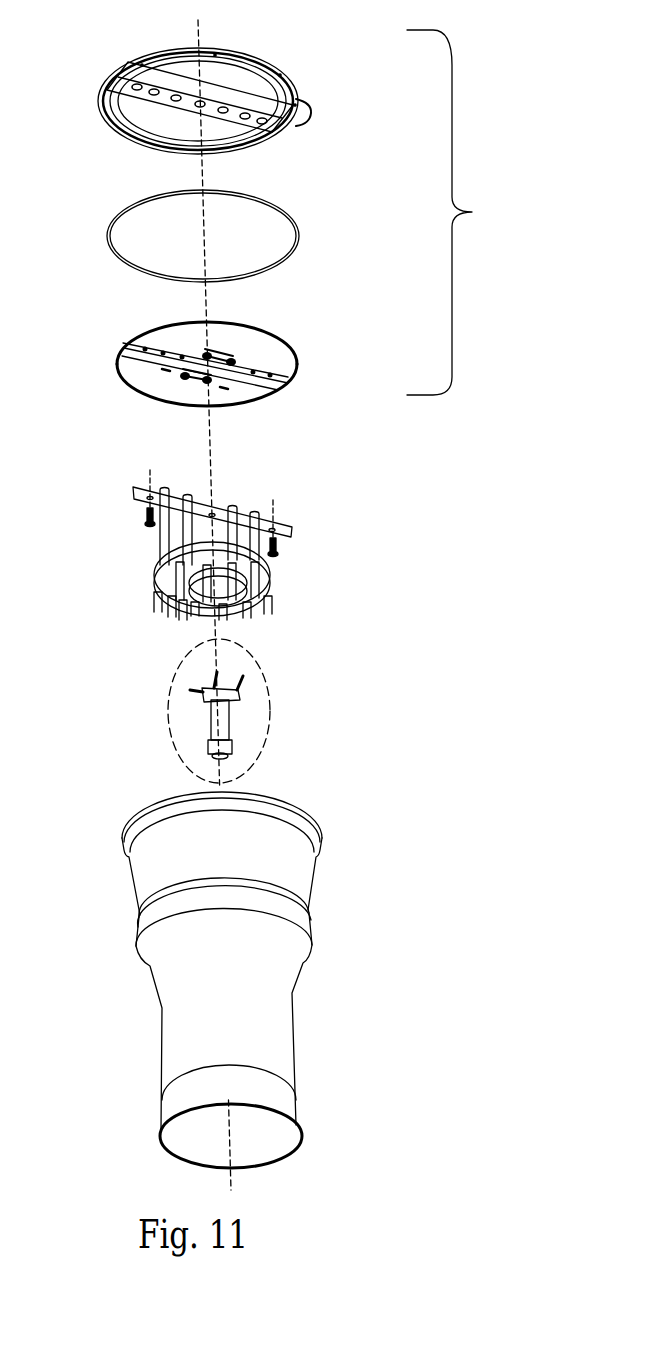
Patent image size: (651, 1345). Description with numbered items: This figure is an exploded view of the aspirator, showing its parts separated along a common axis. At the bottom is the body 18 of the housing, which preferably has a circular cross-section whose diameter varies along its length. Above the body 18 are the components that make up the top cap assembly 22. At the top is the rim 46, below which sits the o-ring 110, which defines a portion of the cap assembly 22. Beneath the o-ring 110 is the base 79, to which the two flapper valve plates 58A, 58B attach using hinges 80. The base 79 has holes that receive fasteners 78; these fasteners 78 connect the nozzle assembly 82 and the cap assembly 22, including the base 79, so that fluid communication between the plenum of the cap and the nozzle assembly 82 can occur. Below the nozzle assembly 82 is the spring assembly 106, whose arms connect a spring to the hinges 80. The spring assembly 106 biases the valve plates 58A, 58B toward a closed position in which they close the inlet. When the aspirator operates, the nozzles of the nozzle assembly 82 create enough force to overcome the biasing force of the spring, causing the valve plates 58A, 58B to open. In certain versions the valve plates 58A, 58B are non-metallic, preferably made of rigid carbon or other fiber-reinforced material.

The body 18 is at (371, 804).
The top cap assembly 22 is at (457, 212).
The rim 46 is at (128, 88).
The flapper valve plate 58A is at (257, 340).
The flapper valve plate 58B is at (162, 395).
The fasteners 78 is at (145, 523).
The base 79 is at (130, 342).
The hinges 80 is at (225, 356).
The nozzle assembly 82 is at (300, 497).
The spring assembly 106 is at (168, 727).
The o-ring 110 is at (140, 205).